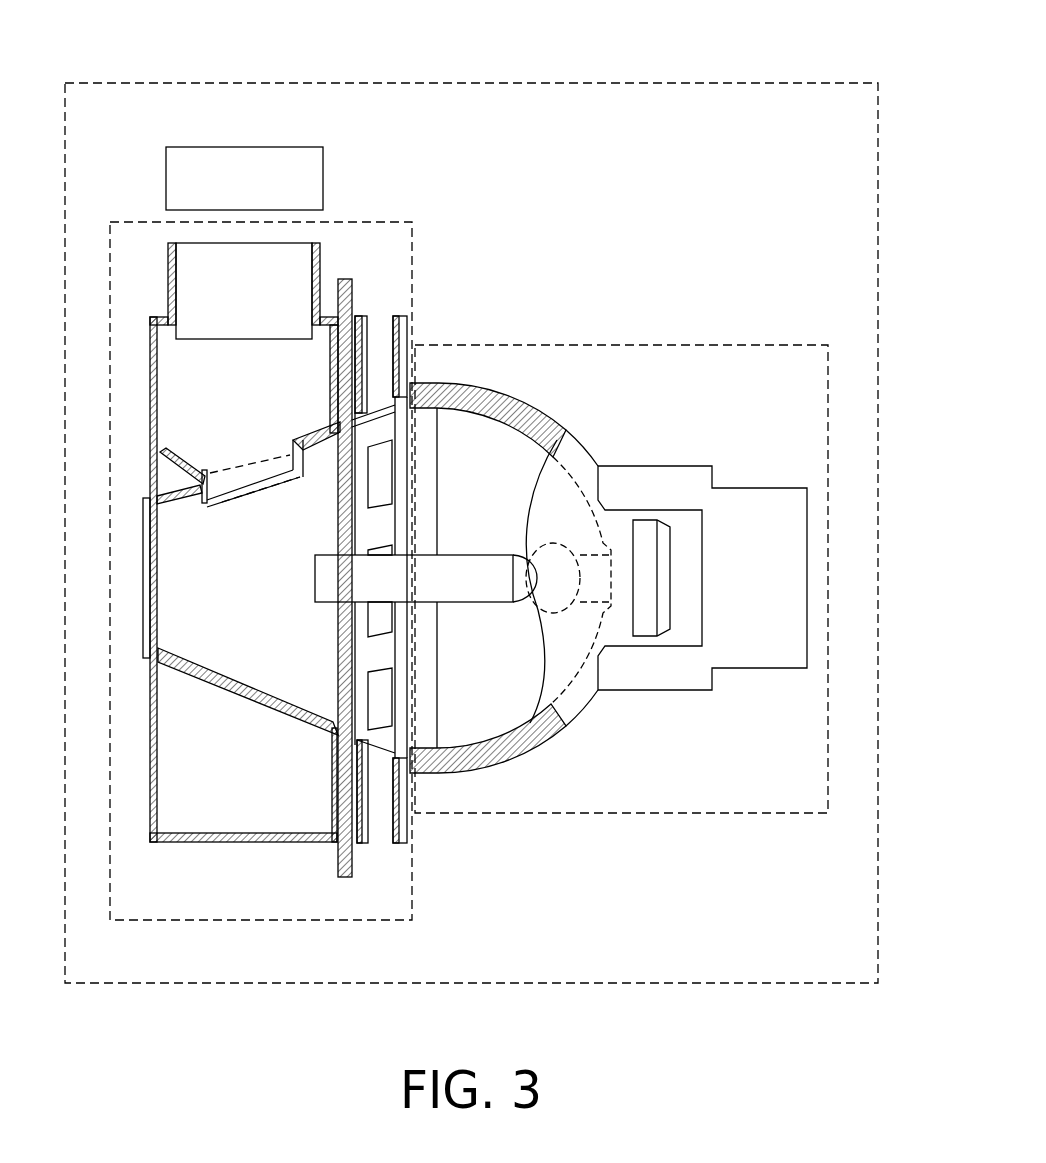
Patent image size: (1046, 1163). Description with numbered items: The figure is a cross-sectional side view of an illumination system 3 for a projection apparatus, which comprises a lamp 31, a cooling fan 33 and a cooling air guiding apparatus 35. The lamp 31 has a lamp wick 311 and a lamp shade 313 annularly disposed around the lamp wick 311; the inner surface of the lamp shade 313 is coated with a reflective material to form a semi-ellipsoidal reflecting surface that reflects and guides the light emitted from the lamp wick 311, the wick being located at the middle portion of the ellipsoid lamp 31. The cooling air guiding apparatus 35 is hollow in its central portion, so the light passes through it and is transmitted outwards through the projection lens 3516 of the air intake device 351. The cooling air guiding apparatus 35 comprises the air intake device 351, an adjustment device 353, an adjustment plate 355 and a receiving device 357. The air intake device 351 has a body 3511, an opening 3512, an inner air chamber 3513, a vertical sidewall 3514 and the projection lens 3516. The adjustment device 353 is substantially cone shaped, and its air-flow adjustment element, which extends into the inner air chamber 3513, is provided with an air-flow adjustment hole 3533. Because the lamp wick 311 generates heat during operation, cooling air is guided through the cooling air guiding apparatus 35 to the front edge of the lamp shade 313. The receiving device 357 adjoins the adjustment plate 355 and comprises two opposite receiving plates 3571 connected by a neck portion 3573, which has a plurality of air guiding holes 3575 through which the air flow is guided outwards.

The illumination system 3 is at (400, 83).
The lamp 31 is at (678, 345).
The lamp wick 311 is at (465, 603).
The lamp shade 313 is at (490, 403).
The cooling fan 33 is at (215, 147).
The cooling air guiding apparatus 35 is at (412, 245).
The air intake device 351 is at (230, 842).
The body 3511 is at (150, 318).
The opening 3512 is at (200, 268).
The inner air chamber 3513 is at (193, 407).
The vertical sidewall 3514 is at (332, 813).
The projection lens 3516 is at (147, 583).
The adjustment device 353 is at (235, 705).
The air-flow adjustment hole 3533 is at (250, 462).
The adjustment plate 355 is at (345, 279).
The receiving device 357 is at (375, 303).
The receiving plate 3571 is at (363, 843).
The neck portion 3573 is at (377, 647).
The air guiding hole 3575 is at (365, 498).